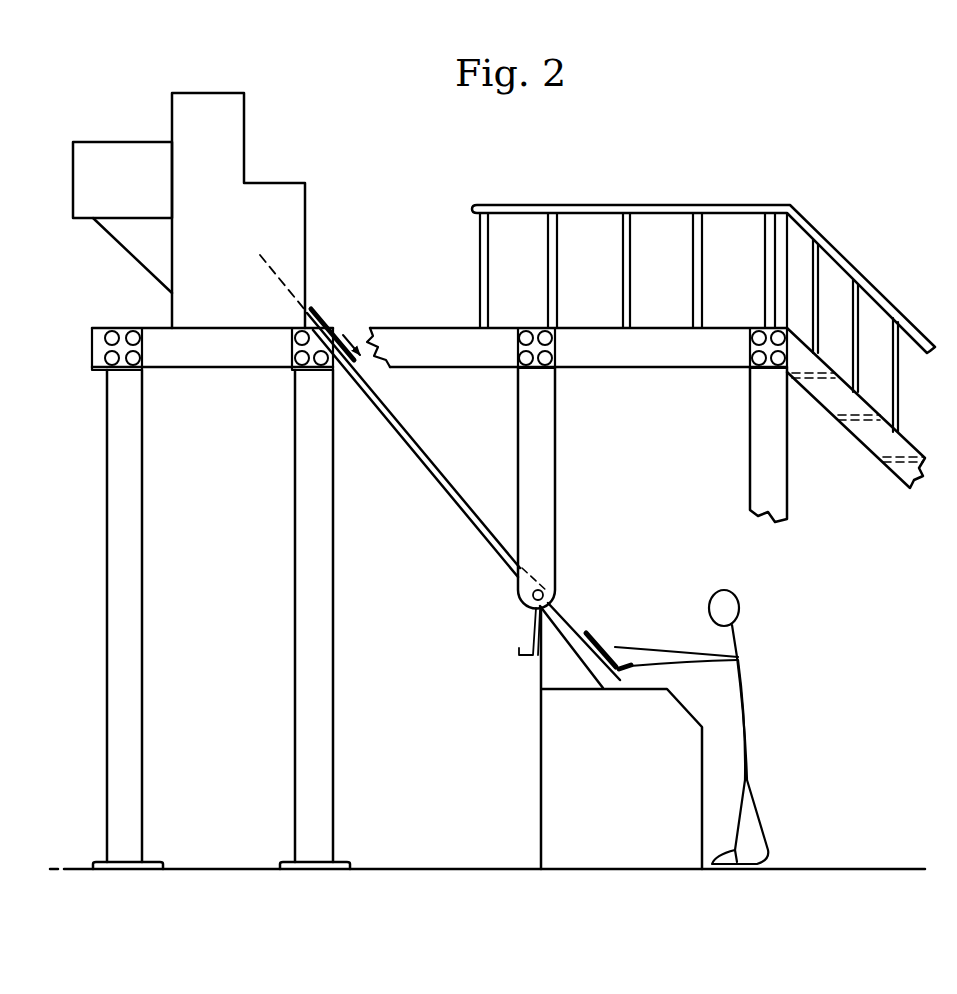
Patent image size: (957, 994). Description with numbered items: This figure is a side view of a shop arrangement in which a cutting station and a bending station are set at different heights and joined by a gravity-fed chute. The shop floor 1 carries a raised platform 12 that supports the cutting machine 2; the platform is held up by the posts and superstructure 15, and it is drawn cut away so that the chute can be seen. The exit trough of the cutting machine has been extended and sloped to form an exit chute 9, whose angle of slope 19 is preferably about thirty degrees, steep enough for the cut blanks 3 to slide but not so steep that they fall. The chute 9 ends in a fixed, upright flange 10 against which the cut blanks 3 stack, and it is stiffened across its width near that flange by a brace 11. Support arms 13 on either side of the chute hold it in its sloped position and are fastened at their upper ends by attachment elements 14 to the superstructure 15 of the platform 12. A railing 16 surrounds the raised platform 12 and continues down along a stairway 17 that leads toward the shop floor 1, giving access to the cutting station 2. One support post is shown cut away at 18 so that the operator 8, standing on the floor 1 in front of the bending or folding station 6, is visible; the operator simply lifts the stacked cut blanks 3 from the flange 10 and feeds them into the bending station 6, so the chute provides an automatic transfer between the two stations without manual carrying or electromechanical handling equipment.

The shop floor 1 is at (380, 865).
The cutting machine 2 is at (280, 157).
The cut blanks 3 is at (318, 318).
The bending or folding station 6 is at (538, 762).
The operator 8 is at (746, 715).
The exit chute 9 is at (460, 502).
The upright flange 10 is at (627, 673).
The brace 11 is at (530, 640).
The raised platform 12 is at (592, 328).
The support arms 13 is at (555, 473).
The attachment elements 14 is at (520, 342).
The posts and superstructure 15 is at (294, 420).
The railing 16 is at (538, 205).
The stairway 17 is at (847, 430).
The cut-away support post 18 is at (750, 483).
The angle of slope 19 is at (447, 369).